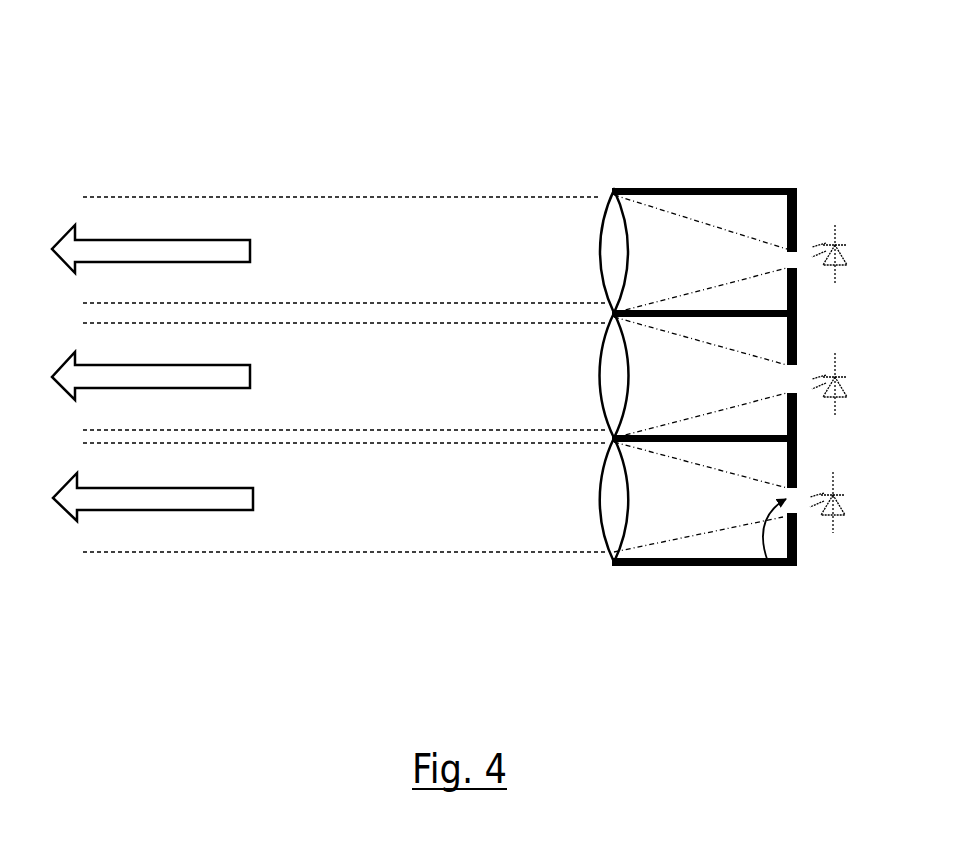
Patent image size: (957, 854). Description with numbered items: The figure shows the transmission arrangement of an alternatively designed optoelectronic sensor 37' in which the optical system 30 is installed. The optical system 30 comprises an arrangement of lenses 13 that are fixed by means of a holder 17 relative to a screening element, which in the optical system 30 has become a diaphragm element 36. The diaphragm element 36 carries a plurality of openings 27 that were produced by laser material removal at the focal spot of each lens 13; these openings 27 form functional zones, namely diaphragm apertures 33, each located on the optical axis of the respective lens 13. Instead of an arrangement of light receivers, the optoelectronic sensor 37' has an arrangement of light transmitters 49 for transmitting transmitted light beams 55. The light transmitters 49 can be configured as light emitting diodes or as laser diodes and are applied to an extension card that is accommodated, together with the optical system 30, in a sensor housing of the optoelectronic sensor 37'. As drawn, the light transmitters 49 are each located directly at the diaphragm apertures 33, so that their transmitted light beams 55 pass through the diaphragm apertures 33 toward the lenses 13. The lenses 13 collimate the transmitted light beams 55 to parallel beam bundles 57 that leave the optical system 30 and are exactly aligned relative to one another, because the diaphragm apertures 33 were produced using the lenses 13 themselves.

The lens 13 is at (610, 233).
The holder 17 is at (700, 567).
The opening 27 is at (768, 562).
The optical system 30 is at (710, 153).
The diaphragm aperture 33 is at (799, 248).
The diaphragm element 36 is at (795, 540).
The optoelectronic sensor 37' is at (397, 115).
The light transmitter 49 is at (854, 239).
The transmitted light beam 55 is at (170, 497).
The parallel beam bundle 57 is at (235, 195).